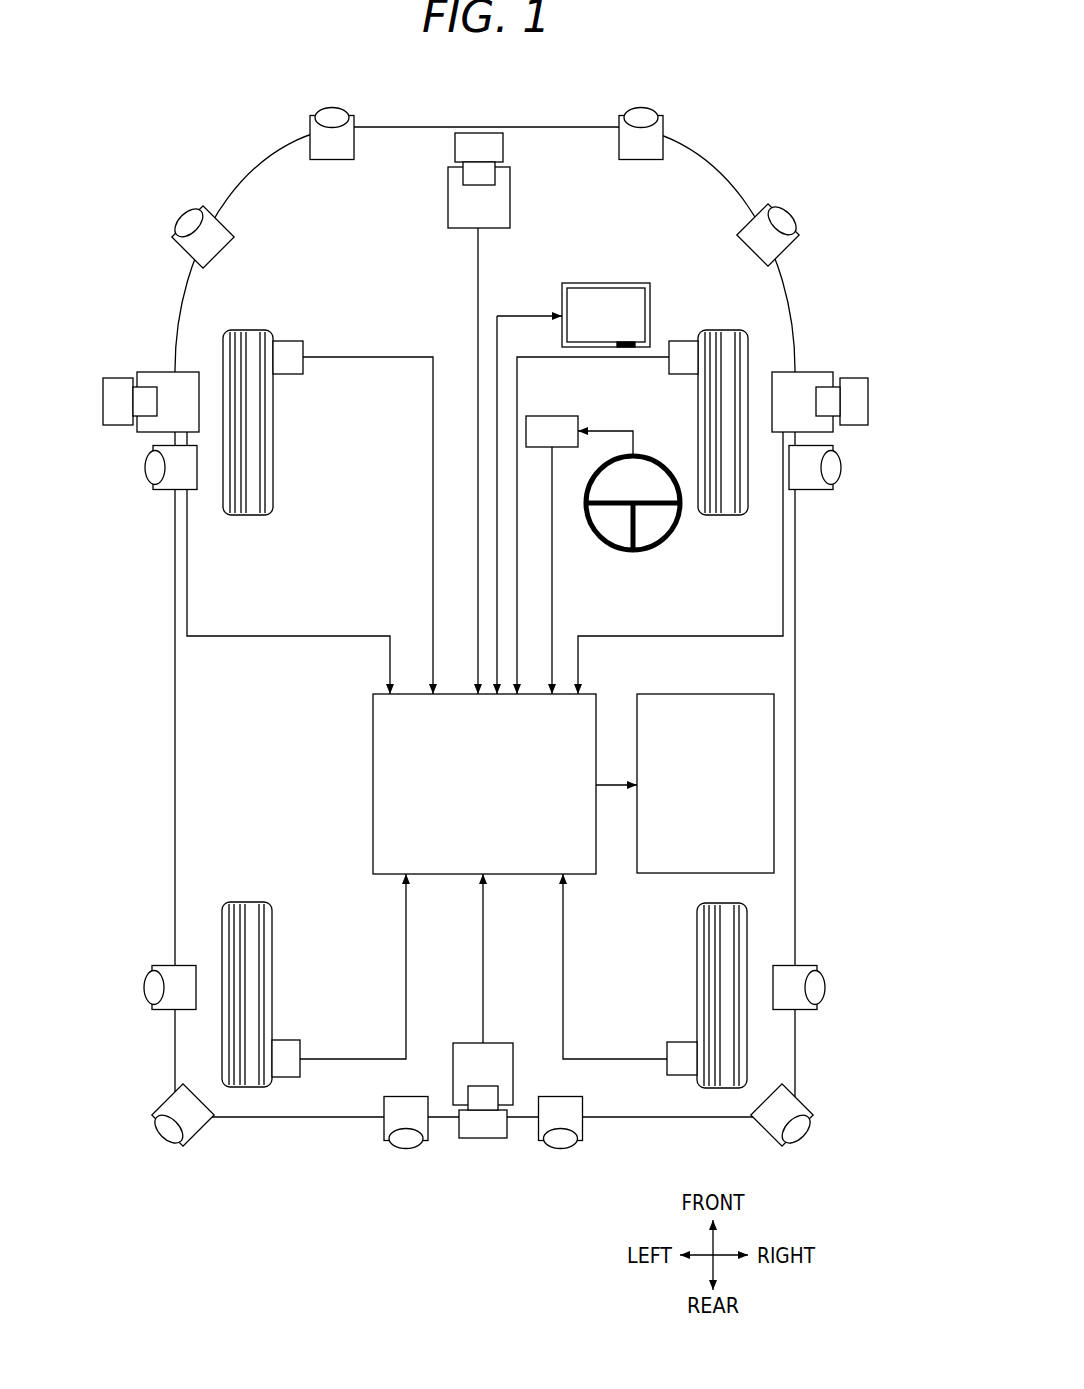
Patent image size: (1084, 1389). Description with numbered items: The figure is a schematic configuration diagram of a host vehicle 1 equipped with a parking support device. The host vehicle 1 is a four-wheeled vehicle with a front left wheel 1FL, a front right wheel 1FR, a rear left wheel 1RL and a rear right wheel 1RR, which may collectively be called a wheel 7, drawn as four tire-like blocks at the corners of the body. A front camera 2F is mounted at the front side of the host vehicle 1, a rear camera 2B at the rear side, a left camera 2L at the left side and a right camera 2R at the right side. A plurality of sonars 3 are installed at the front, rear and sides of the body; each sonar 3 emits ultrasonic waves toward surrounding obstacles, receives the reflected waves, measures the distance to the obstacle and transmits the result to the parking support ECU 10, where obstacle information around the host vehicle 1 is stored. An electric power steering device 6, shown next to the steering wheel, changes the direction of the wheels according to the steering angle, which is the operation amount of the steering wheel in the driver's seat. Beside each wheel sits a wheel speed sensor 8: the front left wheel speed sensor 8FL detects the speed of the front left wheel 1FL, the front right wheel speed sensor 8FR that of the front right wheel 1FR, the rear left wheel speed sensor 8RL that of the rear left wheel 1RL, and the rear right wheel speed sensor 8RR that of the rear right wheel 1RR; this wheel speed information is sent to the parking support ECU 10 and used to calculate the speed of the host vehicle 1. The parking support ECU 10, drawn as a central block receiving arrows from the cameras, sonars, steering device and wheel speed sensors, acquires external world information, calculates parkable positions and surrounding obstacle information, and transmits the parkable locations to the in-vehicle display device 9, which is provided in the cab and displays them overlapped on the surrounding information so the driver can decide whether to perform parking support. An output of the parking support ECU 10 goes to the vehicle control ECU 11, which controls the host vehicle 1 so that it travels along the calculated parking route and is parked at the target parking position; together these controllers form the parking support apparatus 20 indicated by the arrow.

The host vehicle 1 is at (793, 106).
The front camera 2F is at (487, 142).
The rear camera 2B is at (483, 1140).
The left camera 2L is at (142, 436).
The right camera 2R is at (830, 436).
The sonar 3 is at (333, 108).
The electric power steering device 6 is at (553, 416).
The wheel 7 is at (199, 392).
The front left wheel 1FL is at (250, 330).
The front right wheel 1FR is at (722, 330).
The rear left wheel 1RL is at (250, 902).
The rear right wheel 1RR is at (697, 930).
The wheel speed sensor 8 is at (307, 375).
The front left wheel speed sensor 8FL is at (290, 348).
The front right wheel speed sensor 8FR is at (681, 348).
The rear left wheel speed sensor 8RL is at (287, 1048).
The rear right wheel speed sensor 8RR is at (682, 1048).
The in-vehicle display device 9 is at (610, 283).
The parking support ECU 10 is at (373, 733).
The vehicle control ECU 11 is at (774, 731).
The parking support apparatus 20 is at (616, 716).